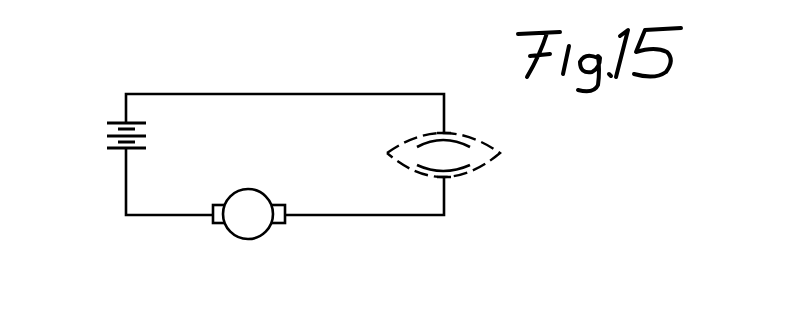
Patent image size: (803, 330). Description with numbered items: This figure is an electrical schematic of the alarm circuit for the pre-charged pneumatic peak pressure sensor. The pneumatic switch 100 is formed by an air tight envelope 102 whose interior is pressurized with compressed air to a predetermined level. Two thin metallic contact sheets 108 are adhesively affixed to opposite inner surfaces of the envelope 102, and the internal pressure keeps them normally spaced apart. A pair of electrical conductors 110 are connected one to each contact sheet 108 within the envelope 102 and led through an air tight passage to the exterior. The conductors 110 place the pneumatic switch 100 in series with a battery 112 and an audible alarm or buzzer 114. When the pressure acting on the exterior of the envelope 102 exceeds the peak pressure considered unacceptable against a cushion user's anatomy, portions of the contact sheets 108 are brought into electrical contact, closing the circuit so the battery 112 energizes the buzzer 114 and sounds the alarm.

The pneumatic switch 100 is at (473, 172).
The envelope 102 is at (483, 167).
The contact sheets 108 is at (428, 144).
The electrical conductors 110 is at (372, 94).
The battery 112 is at (103, 142).
The buzzer 114 is at (223, 225).